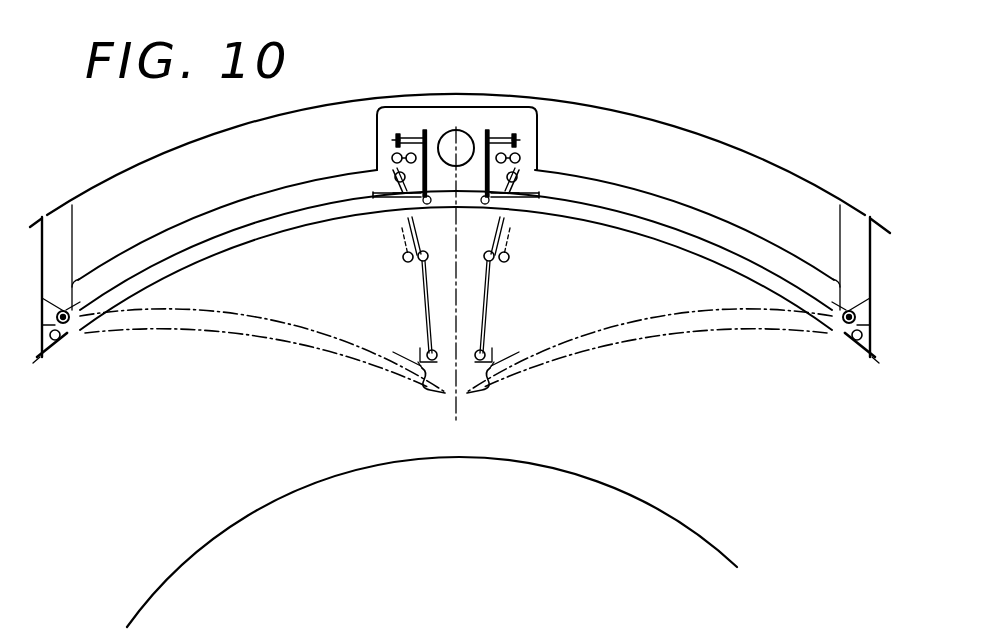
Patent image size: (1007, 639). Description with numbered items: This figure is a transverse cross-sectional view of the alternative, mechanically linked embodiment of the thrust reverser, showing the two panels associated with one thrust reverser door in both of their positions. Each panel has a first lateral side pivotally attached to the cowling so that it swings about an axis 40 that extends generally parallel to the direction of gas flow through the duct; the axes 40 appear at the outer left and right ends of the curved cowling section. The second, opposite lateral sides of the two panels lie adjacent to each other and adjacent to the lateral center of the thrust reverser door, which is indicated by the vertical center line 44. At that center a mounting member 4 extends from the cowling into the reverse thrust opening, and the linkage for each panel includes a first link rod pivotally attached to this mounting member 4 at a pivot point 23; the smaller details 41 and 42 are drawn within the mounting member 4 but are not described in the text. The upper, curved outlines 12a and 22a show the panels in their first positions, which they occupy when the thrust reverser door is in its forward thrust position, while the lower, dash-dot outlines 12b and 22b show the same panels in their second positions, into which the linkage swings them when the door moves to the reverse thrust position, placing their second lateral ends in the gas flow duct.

The mounting member 4 is at (453, 197).
The support bar 41 is at (483, 188).
The bolt and nut assembly 42 is at (418, 172).
The pivot point 23 is at (500, 137).
The first position of panel 12a is at (262, 228).
The first position of panel 22a is at (622, 220).
The second position of panel 12b is at (265, 335).
The second position of panel 22b is at (652, 332).
The lateral center line of thrust reverser door 44 is at (455, 409).
The pivot axis 40 is at (847, 323).